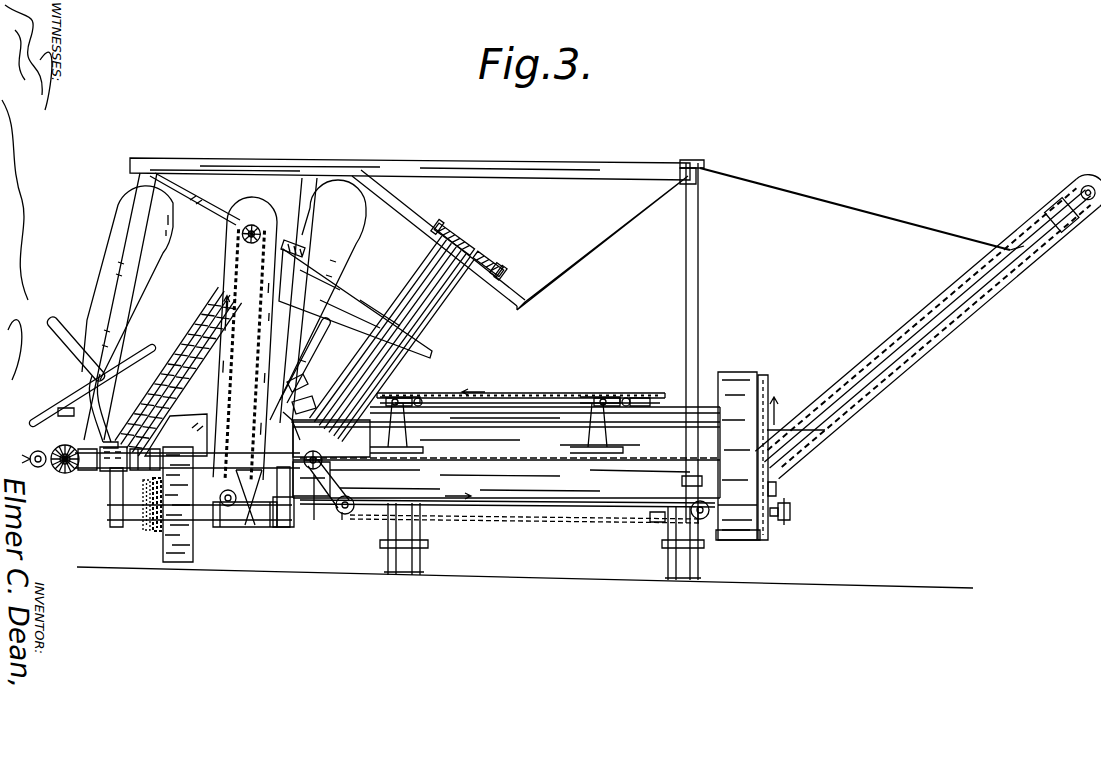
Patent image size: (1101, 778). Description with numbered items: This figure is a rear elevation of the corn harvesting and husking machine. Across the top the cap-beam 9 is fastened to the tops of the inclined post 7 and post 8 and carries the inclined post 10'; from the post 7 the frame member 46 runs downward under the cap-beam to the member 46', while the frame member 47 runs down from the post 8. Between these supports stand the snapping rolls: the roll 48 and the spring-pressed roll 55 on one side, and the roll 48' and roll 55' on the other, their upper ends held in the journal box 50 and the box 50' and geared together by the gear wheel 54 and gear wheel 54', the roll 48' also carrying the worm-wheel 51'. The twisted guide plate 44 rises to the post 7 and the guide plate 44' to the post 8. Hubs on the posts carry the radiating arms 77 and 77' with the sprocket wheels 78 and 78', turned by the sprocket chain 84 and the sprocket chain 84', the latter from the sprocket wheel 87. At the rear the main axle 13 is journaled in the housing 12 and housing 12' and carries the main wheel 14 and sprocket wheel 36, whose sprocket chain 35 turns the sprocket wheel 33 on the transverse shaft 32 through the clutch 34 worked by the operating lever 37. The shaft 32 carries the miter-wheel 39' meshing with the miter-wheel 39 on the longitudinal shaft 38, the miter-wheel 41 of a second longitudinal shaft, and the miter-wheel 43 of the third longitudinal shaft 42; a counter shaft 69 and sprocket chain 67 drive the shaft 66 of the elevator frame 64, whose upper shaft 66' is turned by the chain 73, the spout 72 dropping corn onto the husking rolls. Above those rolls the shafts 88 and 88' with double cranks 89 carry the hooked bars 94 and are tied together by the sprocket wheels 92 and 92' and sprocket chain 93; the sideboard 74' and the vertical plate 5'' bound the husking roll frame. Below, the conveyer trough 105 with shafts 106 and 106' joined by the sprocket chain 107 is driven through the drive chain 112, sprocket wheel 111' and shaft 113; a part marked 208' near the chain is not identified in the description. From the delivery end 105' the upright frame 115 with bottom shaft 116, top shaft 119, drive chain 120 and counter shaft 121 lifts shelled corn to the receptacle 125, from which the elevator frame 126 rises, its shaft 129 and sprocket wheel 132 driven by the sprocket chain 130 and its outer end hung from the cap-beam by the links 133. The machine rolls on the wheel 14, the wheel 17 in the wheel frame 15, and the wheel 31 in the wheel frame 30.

The cap-beam 9 is at (490, 163).
The inclined post 10' is at (717, 341).
The upright frame 115 is at (740, 371).
The shaft 119 is at (769, 392).
The receptacle 125 is at (777, 432).
The drive chain 120 is at (778, 490).
The counter shaft 121 is at (792, 509).
The rotative shaft 116 is at (780, 518).
The rods or links 133 is at (870, 212).
The sprocket chain 130 is at (947, 312).
The elevator frame 126 is at (912, 345).
The shaft 129 is at (1076, 190).
The sprocket wheel 132 is at (1062, 209).
The vertical plate 5'' is at (506, 434).
The sideboard 74' is at (506, 474).
The shaft 113 is at (405, 483).
The conveyer trough 105 is at (507, 530).
The sprocket chain 107 is at (512, 525).
The rotative shaft 106' is at (675, 498).
The rotative shaft 106 is at (352, 551).
The miter-wheel 39 is at (334, 461).
The longitudinal shaft 38 is at (320, 456).
The miter-wheel 39' is at (331, 438).
The wheel frame 15 is at (424, 540).
The wheel 17 is at (416, 573).
The wheel frame 30 is at (664, 527).
The wheel 31 is at (672, 579).
The chain bracket 208' is at (637, 526).
The delivery end 105' is at (738, 572).
The sprocket chain 93 is at (528, 398).
The bars 94 is at (546, 402).
The shaft 88 is at (414, 384).
The sprocket wheel 92 is at (438, 374).
The shaft 88' is at (610, 384).
The sprocket wheel 92' is at (597, 384).
The double cranks 89 is at (638, 397).
The housing 12' is at (187, 500).
The main wheel 14 is at (182, 564).
The transverse shaft 32 is at (205, 522).
The main axle 13 is at (245, 529).
The housing 12 is at (274, 538).
The counter shaft 69 is at (287, 528).
The clutch 34 is at (144, 525).
The sprocket chain 35 is at (151, 530).
The sprocket wheel 36 is at (158, 533).
The shaft 66 is at (227, 524).
The sprocket chain 67 is at (255, 527).
The miter-wheel 41 is at (290, 414).
The sprocket wheel 111' is at (290, 558).
The drive chain 112 is at (342, 522).
The miter-wheel 43 is at (62, 473).
The sprocket wheel 87 is at (27, 448).
The third longitudinal shaft 42 is at (96, 475).
The worm-wheel 51' is at (91, 495).
The arms 77' is at (75, 337).
The sprocket wheel 78' is at (92, 385).
The operating lever 37 is at (90, 385).
The sprocket chain 84' is at (53, 400).
The sprocket wheel 33 is at (176, 435).
The snapping roll 48' is at (184, 368).
The snapping roll 55' is at (172, 367).
The guide plate 44 is at (378, 329).
The snapping roll 48 is at (387, 336).
The journal box 50 is at (397, 341).
The snapping roll 55 is at (410, 349).
The box 50' is at (501, 310).
The gear wheel 54 is at (458, 233).
The gear wheel 54' is at (402, 240).
The frame member 46 is at (438, 238).
The member 46' is at (606, 239).
The spout 72 is at (356, 305).
The arms 77 is at (315, 360).
The sprocket wheel 78 is at (309, 377).
The sprocket chain 84 is at (294, 410).
The elevator frame 64 is at (227, 256).
The chain 73 is at (236, 278).
The shaft 66' is at (256, 218).
The guide plate 44' is at (110, 306).
The post 8 is at (140, 197).
The frame member 47 is at (222, 210).
The post 7 is at (330, 198).